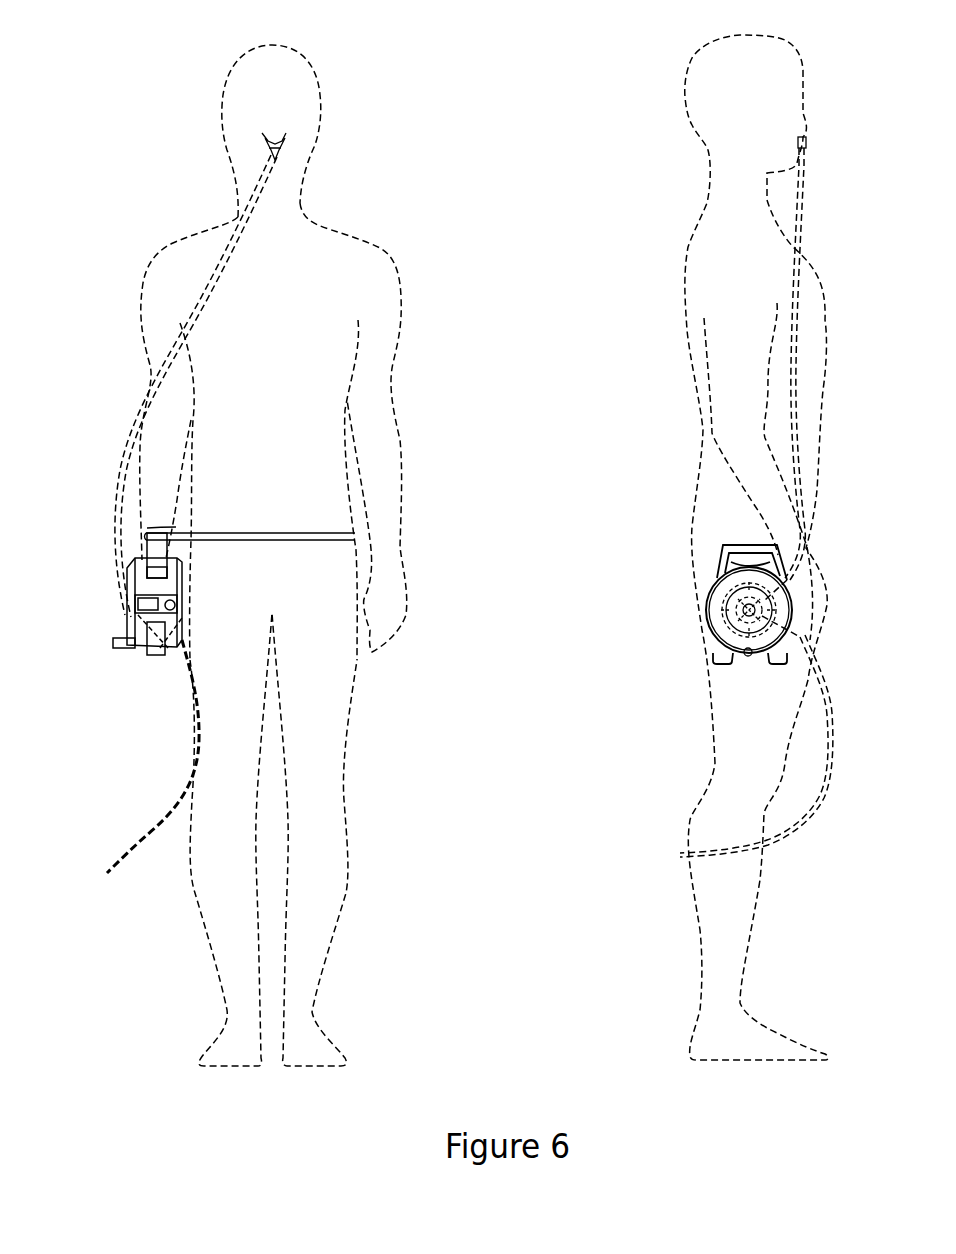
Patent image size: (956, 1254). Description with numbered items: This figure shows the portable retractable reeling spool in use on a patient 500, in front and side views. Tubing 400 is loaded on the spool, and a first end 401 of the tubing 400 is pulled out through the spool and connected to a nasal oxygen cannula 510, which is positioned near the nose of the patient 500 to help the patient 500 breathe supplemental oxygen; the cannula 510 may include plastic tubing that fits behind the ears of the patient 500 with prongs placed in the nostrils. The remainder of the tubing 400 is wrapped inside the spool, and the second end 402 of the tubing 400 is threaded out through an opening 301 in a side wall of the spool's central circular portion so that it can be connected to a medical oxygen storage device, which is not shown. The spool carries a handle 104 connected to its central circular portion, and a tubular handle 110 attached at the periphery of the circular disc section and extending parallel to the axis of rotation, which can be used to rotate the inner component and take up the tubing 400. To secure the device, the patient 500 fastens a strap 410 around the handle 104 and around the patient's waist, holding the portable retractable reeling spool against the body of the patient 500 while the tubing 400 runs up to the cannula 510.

The handle 104 is at (720, 548).
The tubular handle 110 is at (123, 650).
The opening 301 is at (133, 610).
The tubing 400 is at (181, 386).
The first end 401 is at (248, 180).
The second end 402 is at (122, 857).
The strap 410 is at (365, 541).
The patient 500 is at (680, 297).
The nasal oxygen cannula 510 is at (261, 143).